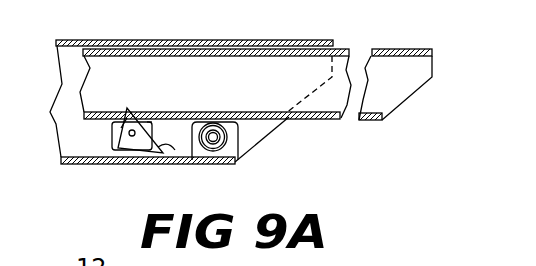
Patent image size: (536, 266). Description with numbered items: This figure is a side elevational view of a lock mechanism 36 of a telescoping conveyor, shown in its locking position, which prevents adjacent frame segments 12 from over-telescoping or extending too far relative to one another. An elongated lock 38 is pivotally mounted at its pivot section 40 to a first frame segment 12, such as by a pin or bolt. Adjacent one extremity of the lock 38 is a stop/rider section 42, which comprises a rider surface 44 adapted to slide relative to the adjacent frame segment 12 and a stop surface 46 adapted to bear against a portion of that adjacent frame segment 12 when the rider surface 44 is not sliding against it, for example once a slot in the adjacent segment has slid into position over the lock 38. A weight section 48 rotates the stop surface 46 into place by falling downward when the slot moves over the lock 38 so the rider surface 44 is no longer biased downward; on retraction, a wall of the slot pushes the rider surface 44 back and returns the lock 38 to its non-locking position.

The frame segment 12 is at (190, 41).
The lock mechanism 36 is at (162, 132).
The elongated lock 38 is at (148, 148).
The pivot section 40 is at (128, 135).
The stop/rider section 42 is at (131, 119).
The rider surface 44 is at (147, 122).
The stop surface 46 is at (121, 128).
The weight section 48 is at (160, 142).